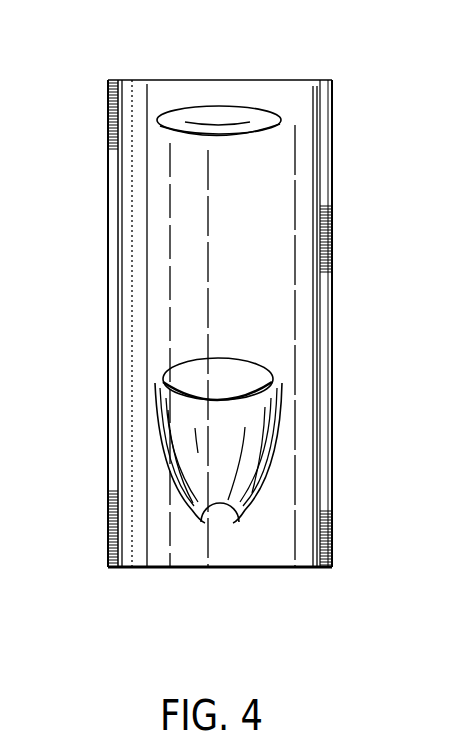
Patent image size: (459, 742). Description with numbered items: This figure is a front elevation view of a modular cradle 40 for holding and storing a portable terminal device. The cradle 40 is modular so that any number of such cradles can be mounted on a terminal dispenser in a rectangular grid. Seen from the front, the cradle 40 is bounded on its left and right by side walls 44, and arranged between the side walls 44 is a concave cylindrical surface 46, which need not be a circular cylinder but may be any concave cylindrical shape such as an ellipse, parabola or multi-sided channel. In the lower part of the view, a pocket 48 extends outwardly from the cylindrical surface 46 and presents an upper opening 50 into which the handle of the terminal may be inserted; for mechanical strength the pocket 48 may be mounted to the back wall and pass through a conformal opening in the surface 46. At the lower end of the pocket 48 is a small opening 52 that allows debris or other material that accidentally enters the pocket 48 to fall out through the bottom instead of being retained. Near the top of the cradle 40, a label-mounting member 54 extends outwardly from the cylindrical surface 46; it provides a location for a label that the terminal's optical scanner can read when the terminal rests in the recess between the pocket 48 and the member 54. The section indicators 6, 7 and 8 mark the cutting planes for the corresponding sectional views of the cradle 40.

The modular cradle 40 is at (100, 47).
The side walls 44 is at (108, 413).
The concave cylindrical surface 46 is at (267, 190).
The pocket 48 is at (227, 452).
The upper opening 50 is at (233, 380).
The small opening 52 is at (227, 522).
The label-mounting member 54 is at (261, 122).
The section line 6- 6 is at (99, 199).
The section line 7- 7 is at (219, 72).
The section line 8- 8 is at (98, 274).